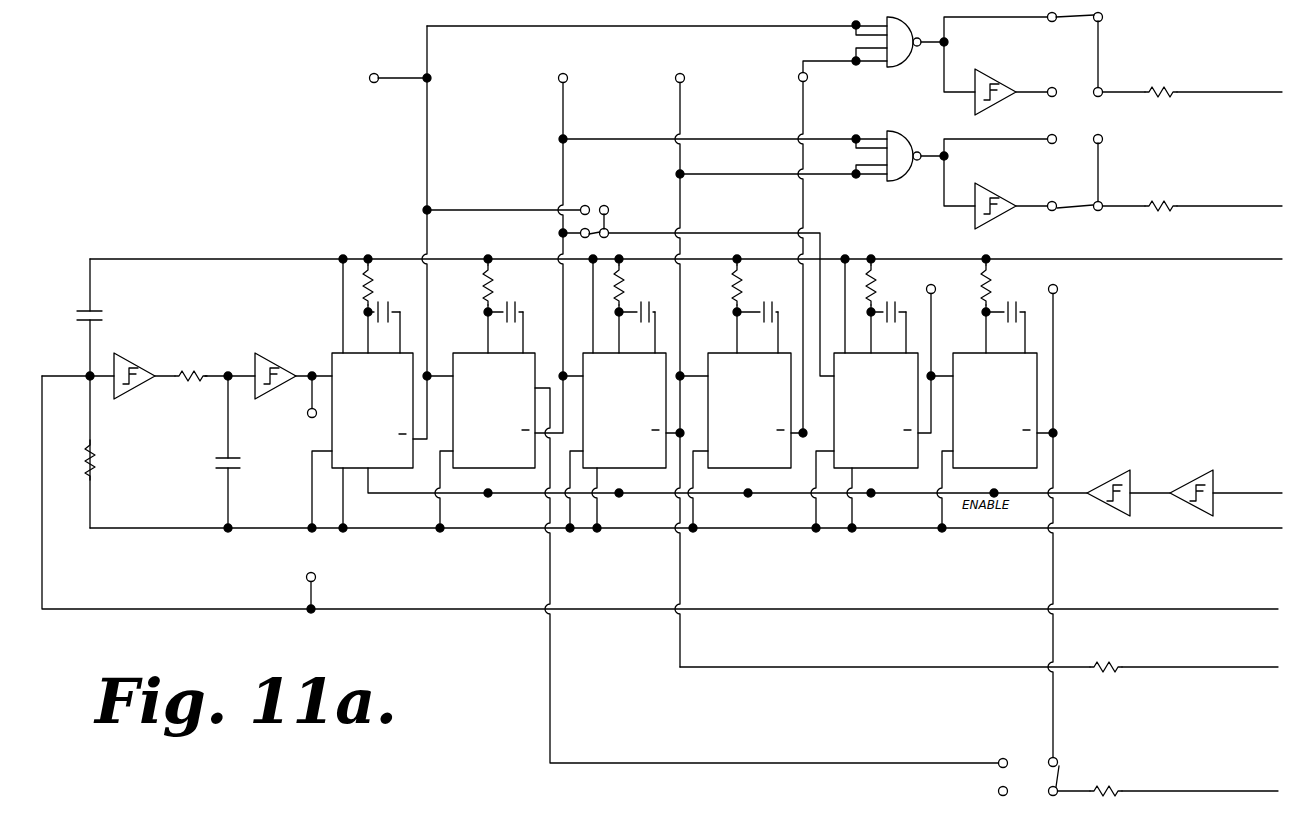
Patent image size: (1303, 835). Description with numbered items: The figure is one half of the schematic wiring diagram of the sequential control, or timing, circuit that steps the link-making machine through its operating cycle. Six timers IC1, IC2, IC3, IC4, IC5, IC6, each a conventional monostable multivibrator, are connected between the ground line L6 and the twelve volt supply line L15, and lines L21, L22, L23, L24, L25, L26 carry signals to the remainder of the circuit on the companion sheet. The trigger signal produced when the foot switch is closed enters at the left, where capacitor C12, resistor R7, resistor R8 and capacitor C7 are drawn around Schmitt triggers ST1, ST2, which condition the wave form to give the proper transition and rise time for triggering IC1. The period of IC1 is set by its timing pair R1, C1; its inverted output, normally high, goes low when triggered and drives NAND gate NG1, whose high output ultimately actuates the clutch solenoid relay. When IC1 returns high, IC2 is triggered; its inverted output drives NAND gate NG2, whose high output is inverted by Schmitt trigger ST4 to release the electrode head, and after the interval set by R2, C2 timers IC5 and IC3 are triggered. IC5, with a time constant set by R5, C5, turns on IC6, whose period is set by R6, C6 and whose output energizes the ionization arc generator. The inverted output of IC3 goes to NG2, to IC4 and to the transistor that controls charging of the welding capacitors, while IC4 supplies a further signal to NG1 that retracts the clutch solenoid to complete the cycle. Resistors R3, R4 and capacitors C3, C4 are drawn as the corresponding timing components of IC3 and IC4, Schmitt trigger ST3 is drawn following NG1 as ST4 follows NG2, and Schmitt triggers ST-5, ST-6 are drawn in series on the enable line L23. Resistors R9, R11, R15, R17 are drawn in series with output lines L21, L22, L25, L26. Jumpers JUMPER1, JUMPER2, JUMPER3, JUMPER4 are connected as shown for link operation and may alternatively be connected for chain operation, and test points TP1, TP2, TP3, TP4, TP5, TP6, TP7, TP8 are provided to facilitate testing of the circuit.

The supply line L15 is at (1113, 261).
The ground line L6 is at (1241, 548).
The line L24 is at (1229, 596).
The line L25 is at (1249, 659).
The line L26 is at (1234, 785).
The line L23 is at (1277, 476).
The line L21 is at (1257, 120).
The line L22 is at (1257, 230).
The resistor R1 is at (377, 287).
The resistor R2 is at (500, 287).
The timing resistor R3 is at (631, 287).
The timing resistor R4 is at (749, 287).
The resistor R5 is at (883, 287).
The resistor R6 is at (998, 287).
The resistor R7 is at (101, 460).
The resistor R8 is at (191, 385).
The resistor R9 is at (1163, 82).
The resistor R11 is at (1163, 196).
The resistor R15 is at (1106, 653).
The resistor R17 is at (1108, 779).
The capacitor C1 is at (384, 320).
The capacitor C2 is at (505, 320).
The timing capacitor C3 is at (637, 320).
The timing capacitor C4 is at (757, 320).
The capacitor C5 is at (888, 320).
The capacitor C6 is at (1005, 320).
The capacitor C7 is at (239, 461).
The capacitor C12 is at (99, 309).
The timer IC1 is at (372, 364).
The timer IC2 is at (494, 390).
The timer IC3 is at (624, 364).
The timer IC4 is at (749, 390).
The timer IC5 is at (876, 364).
The timer IC6 is at (995, 390).
The Schmitt trigger ST1 is at (152, 350).
The Schmitt trigger ST2 is at (290, 348).
The Schmitt trigger ST3 is at (992, 78).
The Schmitt trigger ST4 is at (992, 190).
The Schmitt trigger ST-5 is at (1108, 470).
The Schmitt trigger ST-6 is at (1190, 470).
The NAND gate NG1 is at (908, 70).
The NAND gate NG2 is at (910, 130).
The test point TP1 is at (325, 575).
The test point TP2 is at (299, 403).
The test point TP3 is at (388, 89).
The test point TP4 is at (580, 81).
The test point TP5 is at (683, 69).
The test point TP6 is at (783, 81).
The test point TP7 is at (937, 281).
The test point TP8 is at (1059, 281).
The jumper JUMPER1 is at (1083, 61).
The jumper JUMPER2 is at (1085, 181).
The jumper JUMPER3 is at (1012, 775).
The jumper JUMPER4 is at (614, 221).